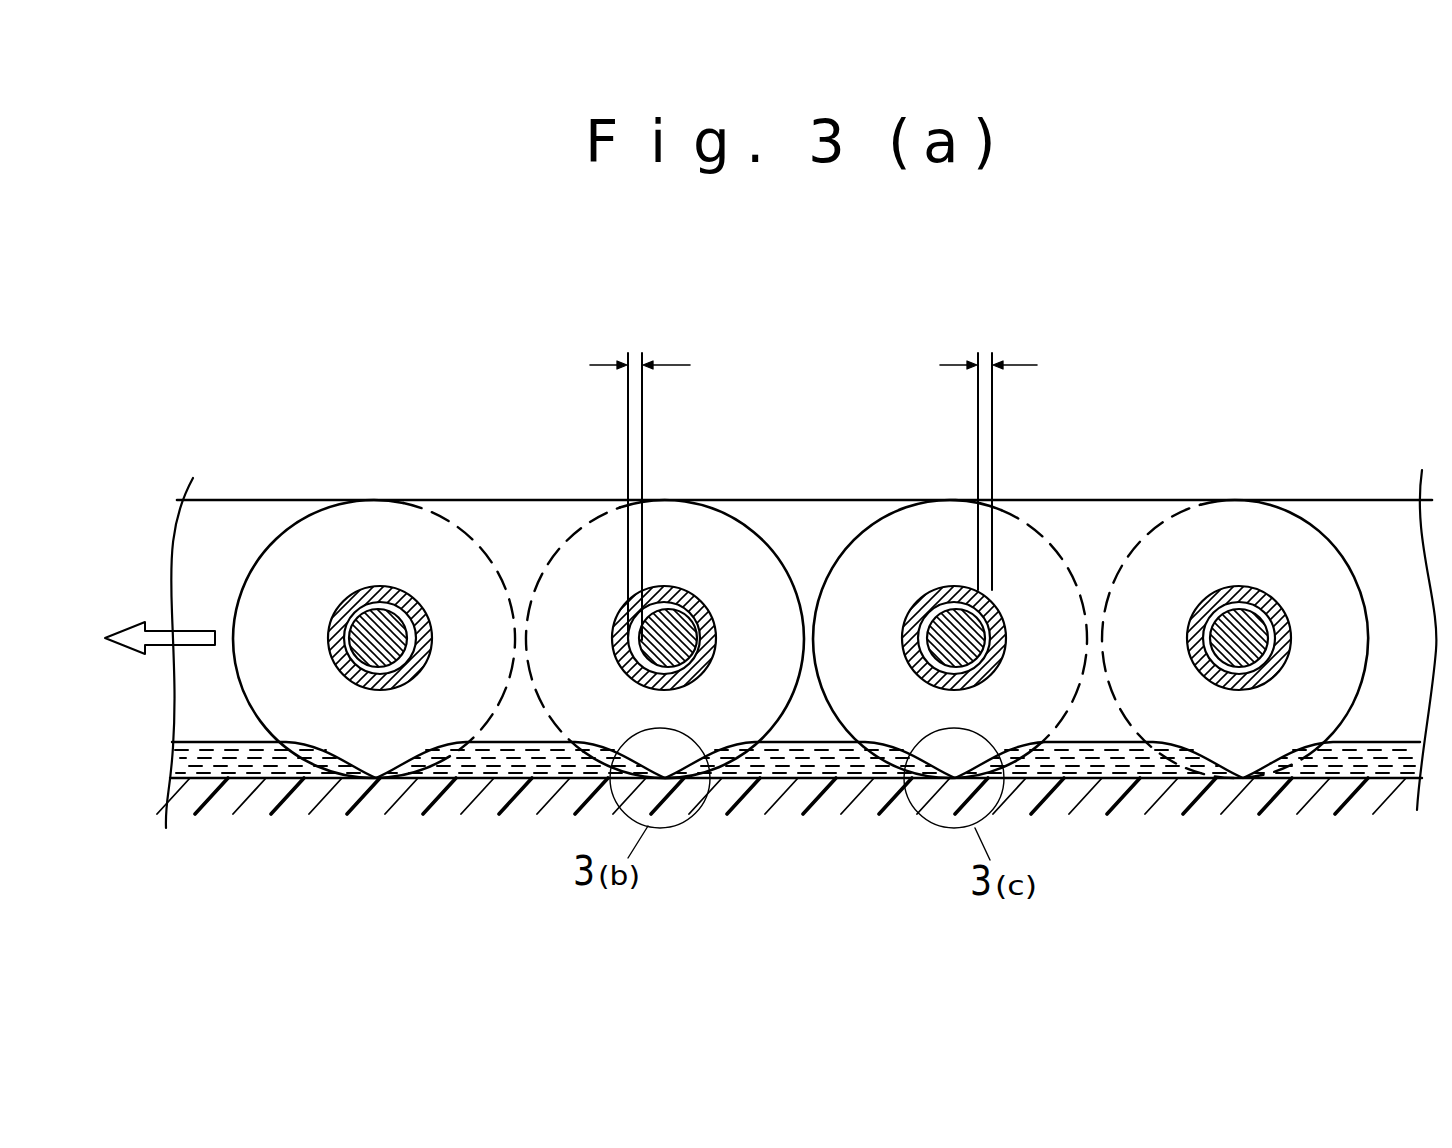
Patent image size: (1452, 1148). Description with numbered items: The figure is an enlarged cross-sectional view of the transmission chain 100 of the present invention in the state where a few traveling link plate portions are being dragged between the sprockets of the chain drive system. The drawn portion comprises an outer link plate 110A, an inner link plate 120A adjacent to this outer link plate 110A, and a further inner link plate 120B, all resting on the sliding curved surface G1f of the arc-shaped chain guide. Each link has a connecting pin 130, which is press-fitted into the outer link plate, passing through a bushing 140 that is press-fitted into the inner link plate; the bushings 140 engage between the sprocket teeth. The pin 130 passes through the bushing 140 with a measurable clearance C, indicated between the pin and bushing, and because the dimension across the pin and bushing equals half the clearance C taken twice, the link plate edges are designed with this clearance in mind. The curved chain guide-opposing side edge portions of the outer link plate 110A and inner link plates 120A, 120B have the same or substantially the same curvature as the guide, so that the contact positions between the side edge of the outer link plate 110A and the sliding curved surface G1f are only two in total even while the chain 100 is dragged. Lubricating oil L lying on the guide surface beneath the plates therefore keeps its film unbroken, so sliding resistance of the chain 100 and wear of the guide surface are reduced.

The transmission chain 100 is at (757, 473).
The outer link plate 110A is at (823, 500).
The inner link plate 120A is at (1143, 500).
The inner link plate 120B is at (490, 500).
The connecting pin 130 is at (380, 620).
The bushing 140 is at (353, 598).
The lubricating oil L is at (818, 765).
The clearance C is at (1270, 406).
The sliding curved surface of the chain guide G1f is at (1347, 779).